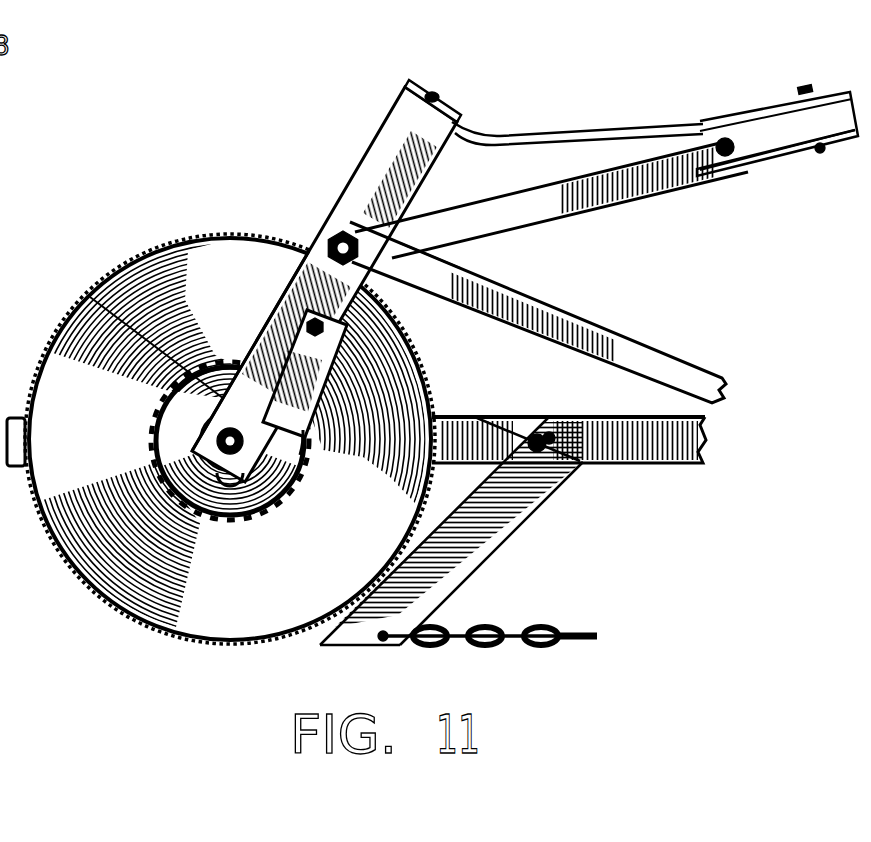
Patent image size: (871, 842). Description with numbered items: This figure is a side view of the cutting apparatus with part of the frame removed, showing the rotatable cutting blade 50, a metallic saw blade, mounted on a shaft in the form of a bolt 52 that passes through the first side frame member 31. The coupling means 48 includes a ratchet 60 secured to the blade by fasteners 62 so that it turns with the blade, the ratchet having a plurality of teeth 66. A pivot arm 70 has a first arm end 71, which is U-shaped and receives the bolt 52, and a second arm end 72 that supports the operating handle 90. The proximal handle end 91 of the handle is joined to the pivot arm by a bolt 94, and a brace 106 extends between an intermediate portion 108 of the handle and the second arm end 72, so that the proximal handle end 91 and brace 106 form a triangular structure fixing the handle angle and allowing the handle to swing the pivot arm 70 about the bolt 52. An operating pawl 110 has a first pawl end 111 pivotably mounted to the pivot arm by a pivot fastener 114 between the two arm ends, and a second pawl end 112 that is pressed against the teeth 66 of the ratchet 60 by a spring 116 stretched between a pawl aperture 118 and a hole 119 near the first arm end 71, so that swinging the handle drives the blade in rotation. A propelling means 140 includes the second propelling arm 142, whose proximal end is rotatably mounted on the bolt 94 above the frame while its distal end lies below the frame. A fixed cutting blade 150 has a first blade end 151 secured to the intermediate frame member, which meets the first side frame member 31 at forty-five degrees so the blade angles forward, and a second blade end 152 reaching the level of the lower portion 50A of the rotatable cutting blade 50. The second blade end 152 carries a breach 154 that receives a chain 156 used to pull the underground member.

The coupling means 48 is at (220, 140).
The rotatable cutting blade 50 is at (97, 533).
The lower portion of the rotatable cutting blade 50A is at (183, 645).
The bolt 52 is at (162, 395).
The ratchet 60 is at (152, 433).
The fasteners 62 is at (150, 462).
The teeth 66 is at (212, 520).
The pivot arm 70 is at (360, 196).
The first arm end 71 is at (90, 297).
The second arm end 72 is at (397, 104).
The operating handle 90 is at (818, 140).
The proximal handle end 91 is at (642, 168).
The bolt 94 is at (328, 240).
The brace 106 is at (570, 125).
The intermediate portion 108 is at (763, 160).
The operating pawl 110 is at (335, 330).
The first pawl end 111 is at (440, 268).
The second pawl end 112 is at (345, 340).
The pivot fastener 114 is at (290, 332).
The spring 116 is at (265, 503).
The pawl aperture 118 is at (315, 470).
The hole 119 is at (240, 520).
The propelling means 140 is at (643, 312).
The second propelling arm 142 is at (657, 367).
The first side frame member 31 is at (697, 432).
The fixed cutting blade 150 is at (480, 553).
The first blade end 151 is at (547, 465).
The second blade end 152 is at (433, 612).
The breach 154 is at (383, 640).
The chain 156 is at (545, 650).